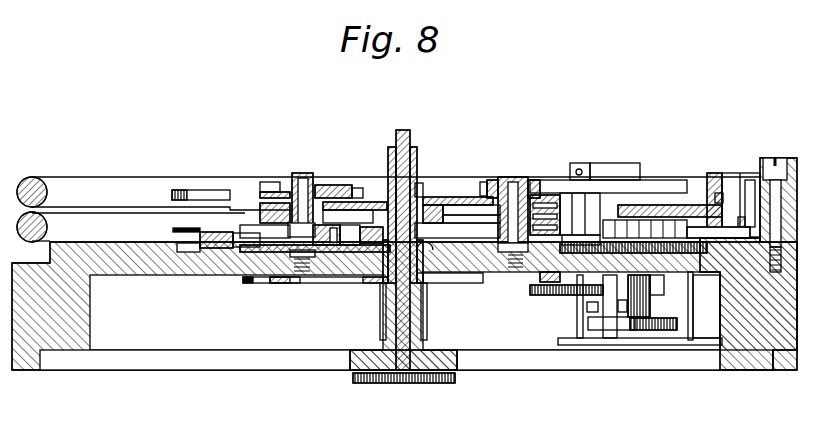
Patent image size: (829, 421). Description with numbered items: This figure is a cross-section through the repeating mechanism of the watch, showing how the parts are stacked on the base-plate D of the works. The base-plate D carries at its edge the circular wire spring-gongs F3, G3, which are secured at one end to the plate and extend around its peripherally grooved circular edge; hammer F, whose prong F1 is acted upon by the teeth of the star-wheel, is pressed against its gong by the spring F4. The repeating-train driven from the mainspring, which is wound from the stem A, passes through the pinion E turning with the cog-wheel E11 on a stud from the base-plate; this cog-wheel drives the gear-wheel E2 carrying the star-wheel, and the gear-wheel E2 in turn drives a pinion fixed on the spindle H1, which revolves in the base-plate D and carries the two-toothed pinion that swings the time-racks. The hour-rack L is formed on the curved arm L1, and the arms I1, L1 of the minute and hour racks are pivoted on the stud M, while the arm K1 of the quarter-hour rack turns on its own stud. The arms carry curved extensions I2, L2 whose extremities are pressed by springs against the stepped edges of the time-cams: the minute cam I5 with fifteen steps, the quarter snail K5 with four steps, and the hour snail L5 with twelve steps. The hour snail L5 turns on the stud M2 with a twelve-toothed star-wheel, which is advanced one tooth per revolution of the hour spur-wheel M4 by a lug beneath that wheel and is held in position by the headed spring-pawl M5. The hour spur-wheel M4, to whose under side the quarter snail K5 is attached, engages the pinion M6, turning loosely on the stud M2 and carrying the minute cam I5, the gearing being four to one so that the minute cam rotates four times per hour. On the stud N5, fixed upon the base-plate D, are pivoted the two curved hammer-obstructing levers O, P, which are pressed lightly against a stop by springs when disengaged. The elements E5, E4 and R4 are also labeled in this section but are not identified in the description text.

The base-plate D is at (404, 306).
The pinion E is at (753, 178).
The circular wire spring-gong F3 is at (388, 193).
The circular wire spring-gong G3 is at (131, 227).
The curved extension of minute-rack arm I2 is at (243, 170).
The headed spring-pawl M5 is at (207, 230).
The curved extension of hour-rack arm L2 is at (248, 248).
The stud M is at (270, 183).
The stud M2 is at (295, 180).
The pinion M6 is at (320, 186).
The minute cam or snail I5 is at (353, 203).
The hour cam or snail L5 is at (353, 252).
The hour-rack L is at (240, 258).
The shaft R4 is at (403, 270).
The quarter cam or snail K5 is at (433, 195).
The curved arm of quarter-hour rack K1 is at (440, 204).
The hour spur-wheel M4 is at (460, 197).
The curved arm of minute-rack I1 is at (483, 195).
The curved arm of hour-rack L1 is at (477, 258).
The stud N5 is at (514, 183).
The curved lever O is at (550, 180).
The spindle H1 is at (582, 163).
The curved lever P is at (605, 190).
The bar E5 is at (650, 230).
The cog-wheel E11 is at (692, 185).
The post E4 is at (713, 175).
The spring F4 is at (748, 180).
The stem A is at (640, 308).
The gear-wheel E2 is at (661, 284).
The prong of hammer F F1 is at (706, 306).